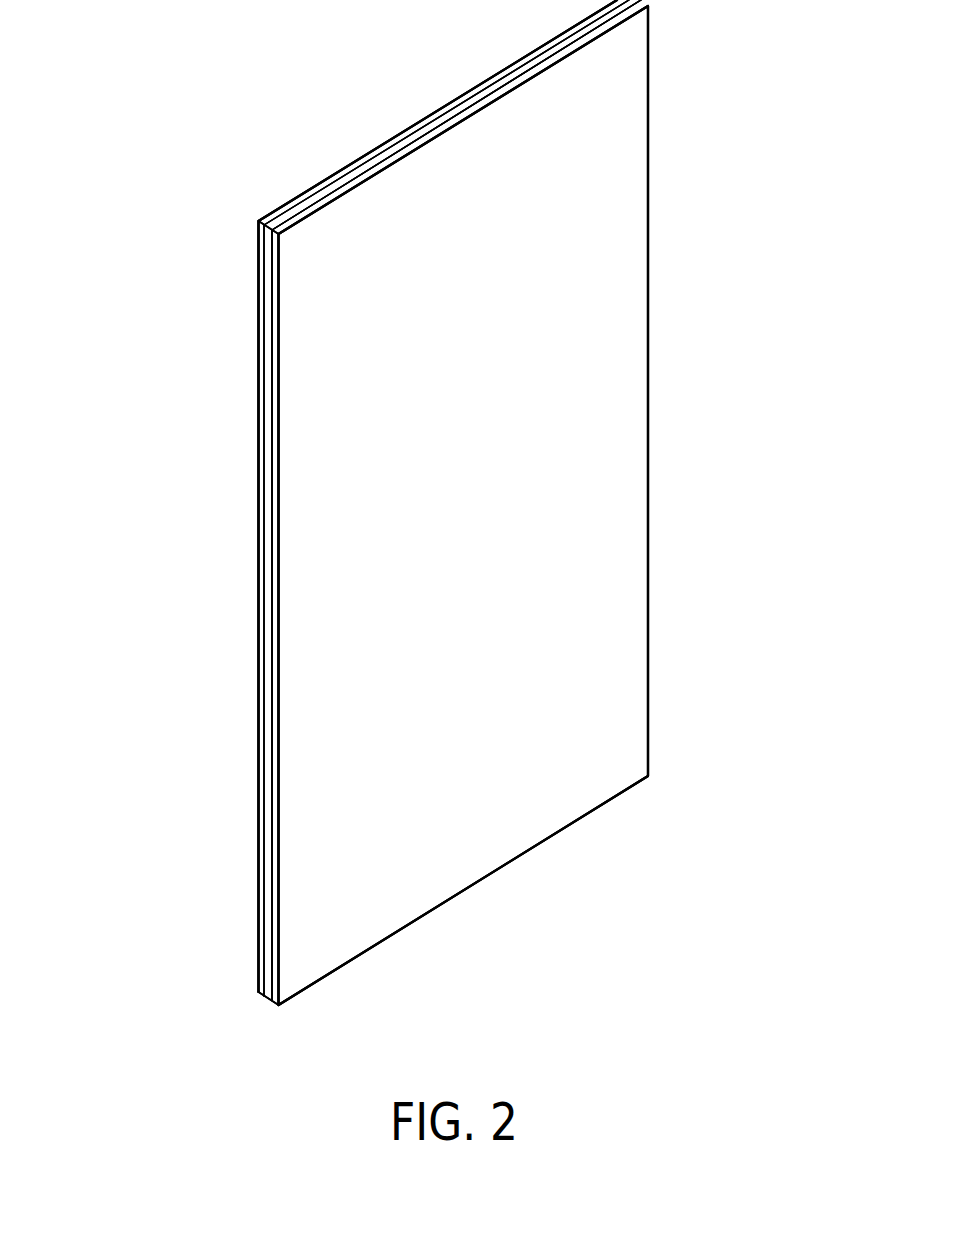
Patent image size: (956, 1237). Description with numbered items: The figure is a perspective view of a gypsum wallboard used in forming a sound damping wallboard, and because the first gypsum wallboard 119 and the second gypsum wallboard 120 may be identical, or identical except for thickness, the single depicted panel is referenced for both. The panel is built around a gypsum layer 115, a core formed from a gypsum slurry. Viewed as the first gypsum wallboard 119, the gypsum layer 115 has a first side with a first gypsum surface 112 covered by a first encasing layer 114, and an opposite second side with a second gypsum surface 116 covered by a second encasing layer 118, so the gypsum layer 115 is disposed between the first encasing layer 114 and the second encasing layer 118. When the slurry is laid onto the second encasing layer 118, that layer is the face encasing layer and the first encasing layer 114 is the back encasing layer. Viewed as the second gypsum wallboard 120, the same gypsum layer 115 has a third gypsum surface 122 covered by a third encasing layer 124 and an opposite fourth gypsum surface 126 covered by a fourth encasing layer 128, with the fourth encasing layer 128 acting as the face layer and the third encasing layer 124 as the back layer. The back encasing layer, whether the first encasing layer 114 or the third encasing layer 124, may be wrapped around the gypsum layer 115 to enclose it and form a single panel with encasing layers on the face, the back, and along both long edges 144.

The first gypsum wallboard 119 is at (182, 110).
The second gypsum wallboard 120 is at (144, 154).
The fourth gypsum surface 126 is at (263, 264).
The fourth encasing layer 128 is at (262, 246).
The third encasing layer 124 is at (272, 359).
The third gypsum surface 122 is at (277, 341).
The second gypsum surface 116 is at (264, 445).
The second encasing layer 118 is at (264, 482).
The first encasing layer 114 is at (276, 540).
The first gypsum surface 112 is at (272, 580).
The gypsum layer 115 is at (267, 659).
The long edges 144 is at (662, 389).